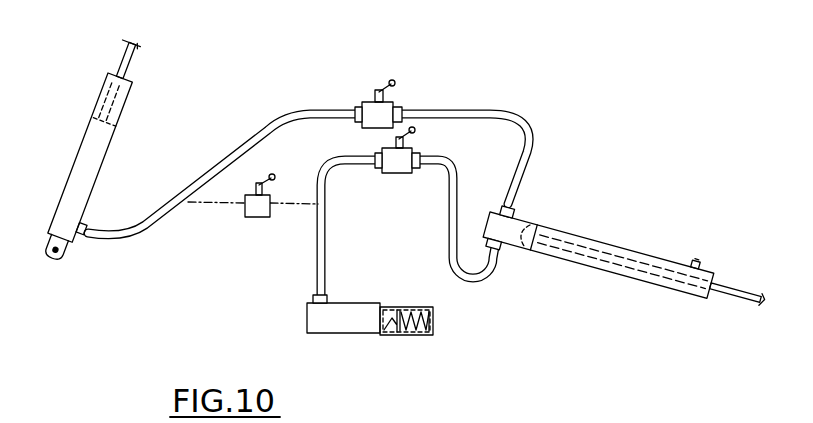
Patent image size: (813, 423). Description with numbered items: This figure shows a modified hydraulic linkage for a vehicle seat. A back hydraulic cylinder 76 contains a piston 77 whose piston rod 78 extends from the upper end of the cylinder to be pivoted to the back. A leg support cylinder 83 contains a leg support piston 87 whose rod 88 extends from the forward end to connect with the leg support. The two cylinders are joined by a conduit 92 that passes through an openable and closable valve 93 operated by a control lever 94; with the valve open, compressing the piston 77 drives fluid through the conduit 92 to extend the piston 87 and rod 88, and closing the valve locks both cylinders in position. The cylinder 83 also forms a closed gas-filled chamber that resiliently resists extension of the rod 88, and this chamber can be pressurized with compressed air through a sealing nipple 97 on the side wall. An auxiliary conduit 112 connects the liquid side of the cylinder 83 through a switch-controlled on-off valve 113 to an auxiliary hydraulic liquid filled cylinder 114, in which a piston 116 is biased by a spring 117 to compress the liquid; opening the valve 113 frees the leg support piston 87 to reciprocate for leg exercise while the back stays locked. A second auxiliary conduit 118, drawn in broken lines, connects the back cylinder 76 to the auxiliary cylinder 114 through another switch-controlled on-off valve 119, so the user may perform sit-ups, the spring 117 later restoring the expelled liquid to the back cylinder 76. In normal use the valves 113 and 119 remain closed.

The back hydraulic cylinder 76 is at (109, 151).
The piston 77 is at (97, 122).
The piston rod 78 is at (135, 47).
The leg support cylinder 83 is at (623, 243).
The leg support piston 87 is at (520, 243).
The rod 88 is at (737, 283).
The conduit 92 is at (275, 120).
The valve 93 is at (363, 91).
The control lever 94 is at (390, 80).
The sealing nipple 97 is at (702, 258).
The auxiliary conduit 112 is at (447, 229).
The switch-controlled on-off valve 113 is at (395, 175).
The auxiliary hydraulic liquid filled cylinder 114 is at (376, 316).
The piston 116 is at (386, 330).
The spring 117 is at (416, 335).
The second auxiliary conduit 118 is at (218, 206).
The switch-controlled on-off valve 119 is at (260, 214).